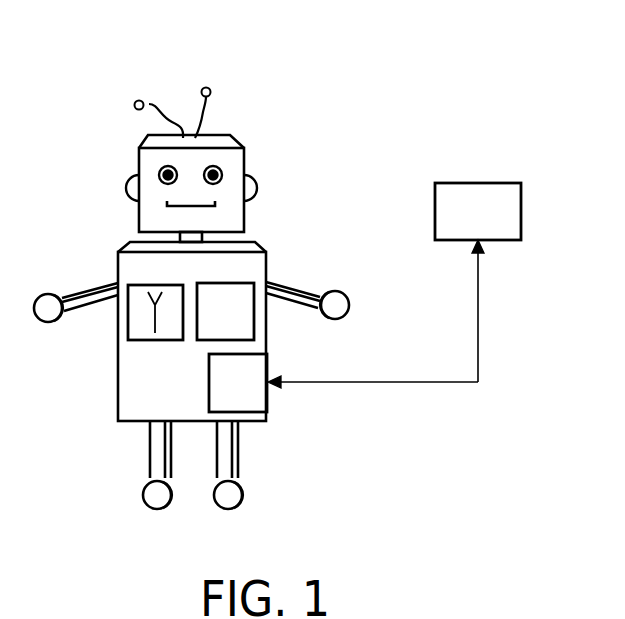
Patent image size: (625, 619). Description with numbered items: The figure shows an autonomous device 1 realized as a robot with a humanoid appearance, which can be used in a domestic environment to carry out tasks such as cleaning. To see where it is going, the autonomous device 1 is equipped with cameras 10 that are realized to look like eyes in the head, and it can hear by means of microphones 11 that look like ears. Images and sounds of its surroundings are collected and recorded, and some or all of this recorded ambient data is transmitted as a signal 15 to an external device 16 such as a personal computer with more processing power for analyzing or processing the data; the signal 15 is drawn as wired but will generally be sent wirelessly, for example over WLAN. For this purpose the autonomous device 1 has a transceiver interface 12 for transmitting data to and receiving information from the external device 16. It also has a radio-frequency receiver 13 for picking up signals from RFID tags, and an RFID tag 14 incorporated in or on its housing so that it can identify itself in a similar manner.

The autonomous device 1 is at (56, 72).
The cameras 10 is at (158, 172).
The microphones 11 is at (132, 190).
The transceiver interface 12 is at (238, 383).
The radio-frequency receiver 13 is at (150, 343).
The RFID tag 14 is at (225, 311).
The signal 15 is at (478, 335).
The external device 16 is at (478, 211).